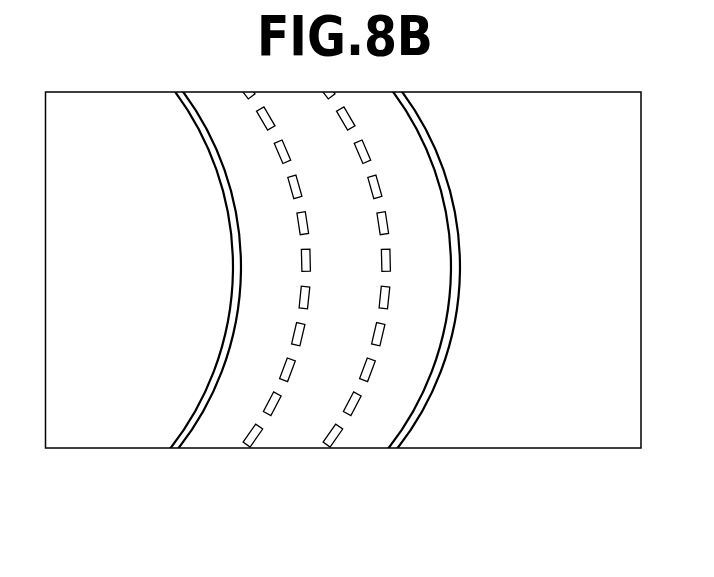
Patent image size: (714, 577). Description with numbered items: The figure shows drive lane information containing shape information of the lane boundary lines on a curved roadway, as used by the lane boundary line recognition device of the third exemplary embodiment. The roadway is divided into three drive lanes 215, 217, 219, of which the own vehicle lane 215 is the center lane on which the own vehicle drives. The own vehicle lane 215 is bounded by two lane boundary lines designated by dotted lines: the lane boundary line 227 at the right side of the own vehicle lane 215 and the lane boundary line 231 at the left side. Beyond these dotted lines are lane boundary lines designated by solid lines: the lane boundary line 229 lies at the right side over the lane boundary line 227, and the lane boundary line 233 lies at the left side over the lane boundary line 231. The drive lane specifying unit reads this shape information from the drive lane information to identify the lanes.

The own vehicle lane 215 is at (292, 423).
The drive lane 217 is at (217, 423).
The drive lane 219 is at (372, 423).
The lane boundary line 227 is at (391, 261).
The lane boundary line 229 is at (459, 232).
The lane boundary line 231 is at (310, 261).
The lane boundary line 233 is at (228, 215).